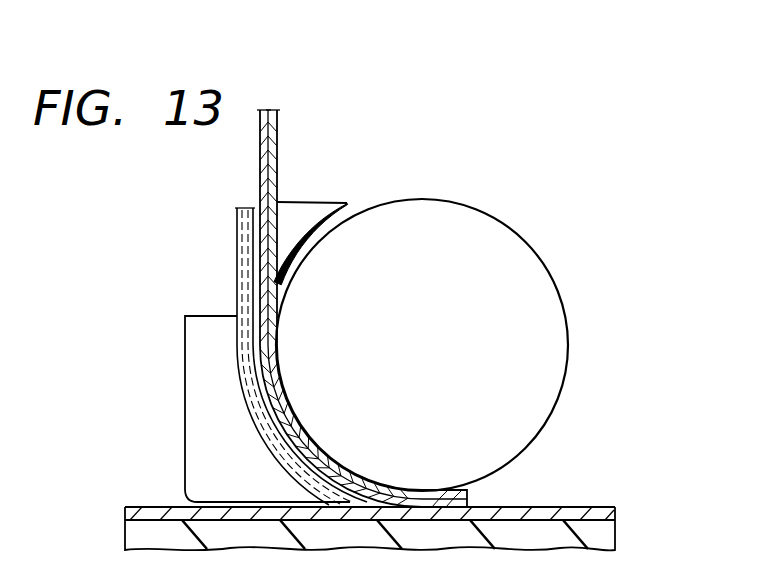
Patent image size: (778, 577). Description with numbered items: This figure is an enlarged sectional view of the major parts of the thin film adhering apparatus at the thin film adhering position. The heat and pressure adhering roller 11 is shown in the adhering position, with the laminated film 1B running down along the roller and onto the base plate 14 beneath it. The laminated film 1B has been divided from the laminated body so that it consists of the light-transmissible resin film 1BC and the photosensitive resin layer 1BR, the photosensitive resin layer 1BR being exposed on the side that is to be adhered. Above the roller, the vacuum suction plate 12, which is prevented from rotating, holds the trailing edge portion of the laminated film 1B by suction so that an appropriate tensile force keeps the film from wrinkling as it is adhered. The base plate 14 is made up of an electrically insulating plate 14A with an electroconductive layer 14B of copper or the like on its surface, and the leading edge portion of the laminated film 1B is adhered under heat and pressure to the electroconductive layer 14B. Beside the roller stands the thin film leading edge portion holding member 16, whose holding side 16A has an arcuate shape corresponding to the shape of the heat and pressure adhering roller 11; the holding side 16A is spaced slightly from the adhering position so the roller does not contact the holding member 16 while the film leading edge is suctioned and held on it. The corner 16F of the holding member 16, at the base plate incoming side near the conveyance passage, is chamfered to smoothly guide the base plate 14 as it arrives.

The heat and pressure adhering roller 11 is at (515, 234).
The vacuum suction plate 12 is at (325, 202).
The laminated film 1B is at (355, 289).
The photosensitive resin layer 1BR is at (260, 126).
The light-transmissible resin film 1BC is at (277, 134).
The base plate 14 is at (430, 495).
The electrically insulating plate 14A is at (612, 530).
The electroconductive layer 14B is at (609, 507).
The thin film leading edge portion holding member 16 is at (185, 353).
The holding side 16A is at (247, 372).
The corner 16F is at (180, 498).